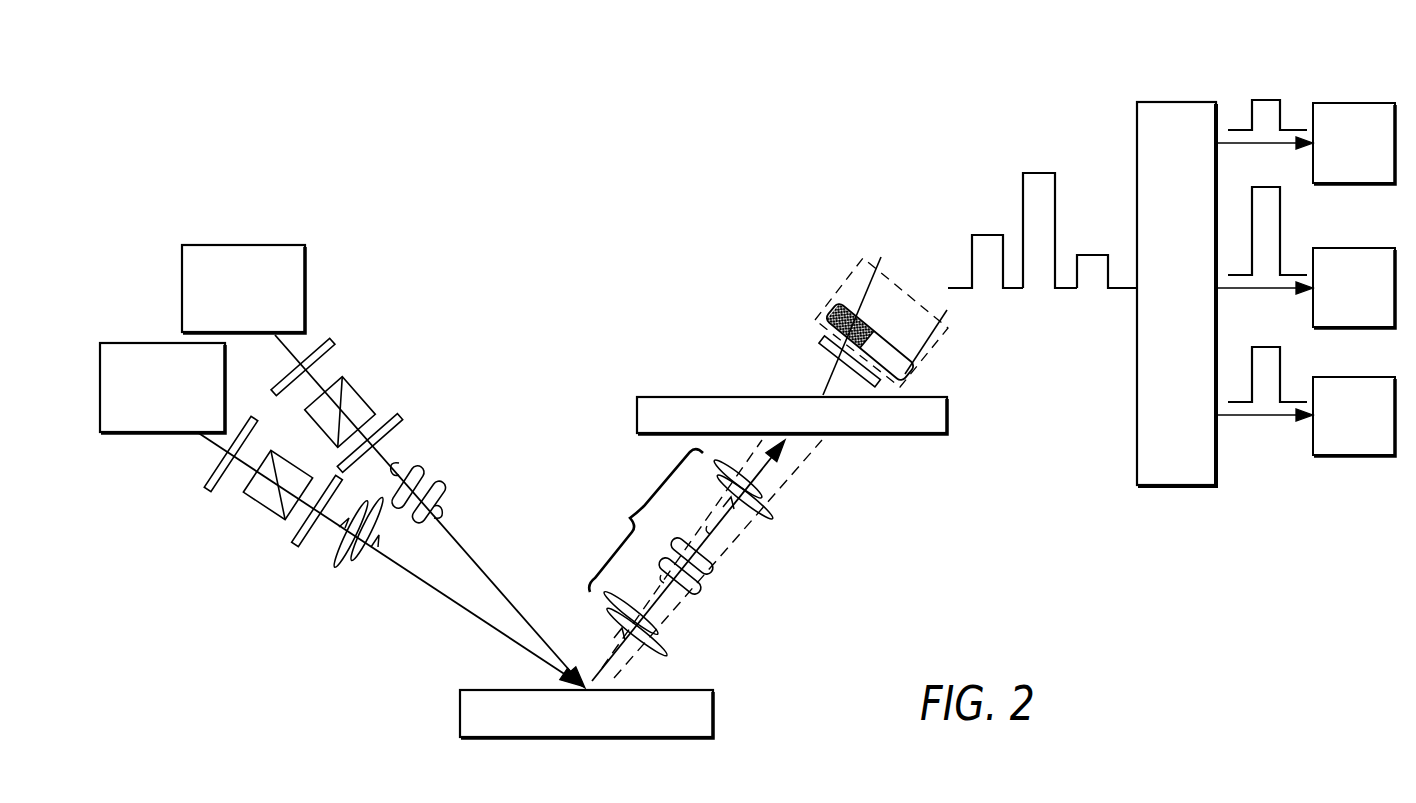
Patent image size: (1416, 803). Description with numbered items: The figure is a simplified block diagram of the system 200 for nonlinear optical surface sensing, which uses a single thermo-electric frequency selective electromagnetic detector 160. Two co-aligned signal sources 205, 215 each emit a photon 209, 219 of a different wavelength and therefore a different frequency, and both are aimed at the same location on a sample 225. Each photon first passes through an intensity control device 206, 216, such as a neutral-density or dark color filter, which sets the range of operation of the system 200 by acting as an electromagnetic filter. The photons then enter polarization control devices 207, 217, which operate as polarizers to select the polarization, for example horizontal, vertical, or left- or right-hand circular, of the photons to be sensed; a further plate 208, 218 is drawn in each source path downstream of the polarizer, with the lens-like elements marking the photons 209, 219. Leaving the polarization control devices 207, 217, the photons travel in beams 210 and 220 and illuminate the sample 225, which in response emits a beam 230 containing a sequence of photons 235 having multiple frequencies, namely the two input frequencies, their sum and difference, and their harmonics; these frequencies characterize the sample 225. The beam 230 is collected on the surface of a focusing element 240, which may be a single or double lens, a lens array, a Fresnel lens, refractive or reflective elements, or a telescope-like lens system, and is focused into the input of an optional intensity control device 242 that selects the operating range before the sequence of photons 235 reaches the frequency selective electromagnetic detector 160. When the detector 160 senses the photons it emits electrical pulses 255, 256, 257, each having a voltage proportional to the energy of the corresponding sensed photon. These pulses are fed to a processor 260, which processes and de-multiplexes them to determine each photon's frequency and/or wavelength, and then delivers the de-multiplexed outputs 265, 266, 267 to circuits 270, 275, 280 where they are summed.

The system for nonlinear optical surface sensing 200 is at (557, 115).
The signal source 205 is at (307, 270).
The signal source 215 is at (137, 343).
The intensity control device 206 is at (333, 348).
The polarization control device 207 is at (363, 398).
The optical plate / polarizer 208 is at (400, 416).
The photon 209 is at (420, 466).
The beam 210 is at (522, 615).
The intensity control device 216 is at (208, 491).
The polarization control device 217 is at (260, 510).
The optical plate / polarizer 218 is at (298, 543).
The photon 219 is at (334, 570).
The beam 220 is at (447, 598).
The sample 225 is at (489, 690).
The beam 230 is at (703, 578).
The sequence of photons 235 is at (705, 560).
The focusing element 240 is at (660, 397).
The intensity control device 242 is at (822, 340).
The frequency selective electromagnetic detector 160 is at (836, 290).
The electrical pulse 255 is at (984, 235).
The electrical pulse 256 is at (1040, 173).
The electrical pulse 257 is at (1094, 255).
The processor 260 is at (1148, 102).
The output 265 is at (1260, 100).
The output 266 is at (1282, 225).
The output 267 is at (1282, 368).
The circuit 270 is at (1327, 103).
The circuit 275 is at (1333, 248).
The circuit 280 is at (1340, 377).